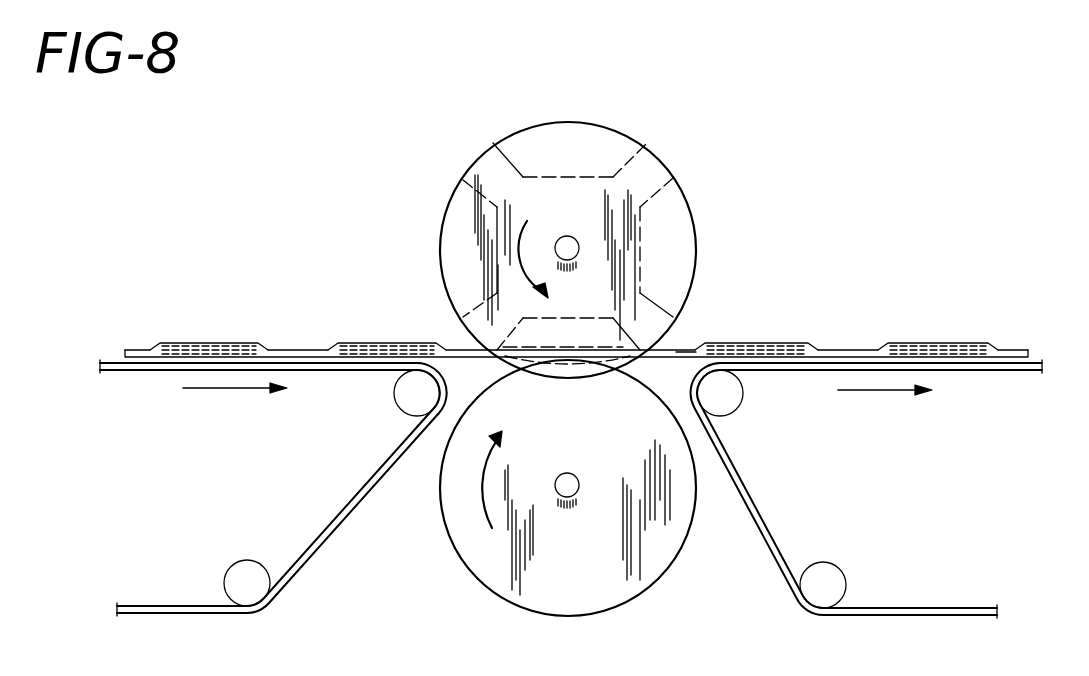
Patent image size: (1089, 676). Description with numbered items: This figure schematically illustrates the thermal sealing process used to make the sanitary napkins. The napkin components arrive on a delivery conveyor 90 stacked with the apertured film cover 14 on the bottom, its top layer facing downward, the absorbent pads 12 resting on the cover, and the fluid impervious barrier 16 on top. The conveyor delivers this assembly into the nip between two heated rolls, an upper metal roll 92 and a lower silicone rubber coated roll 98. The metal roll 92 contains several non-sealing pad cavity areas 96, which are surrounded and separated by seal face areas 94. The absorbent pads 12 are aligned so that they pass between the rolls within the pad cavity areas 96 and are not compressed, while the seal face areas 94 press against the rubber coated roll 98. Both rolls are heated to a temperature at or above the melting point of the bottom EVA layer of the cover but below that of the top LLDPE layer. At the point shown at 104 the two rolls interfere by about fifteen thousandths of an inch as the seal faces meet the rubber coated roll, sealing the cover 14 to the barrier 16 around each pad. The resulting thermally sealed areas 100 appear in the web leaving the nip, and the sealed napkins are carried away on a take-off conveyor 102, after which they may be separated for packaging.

The absorbent pad 12 is at (207, 348).
The apertured film cover 14 is at (130, 356).
The fluid impervious barrier 16 is at (270, 347).
The delivery conveyor 90 is at (357, 372).
The metal roll 92 is at (444, 204).
The seal face areas 94 is at (493, 143).
The non-sealing pad cavity areas 96 is at (440, 250).
The silicone rubber coated roll 98 is at (470, 580).
The thermally sealed areas 100 is at (682, 355).
The take-off conveyor 102 is at (773, 372).
The roll interference 104 is at (576, 385).